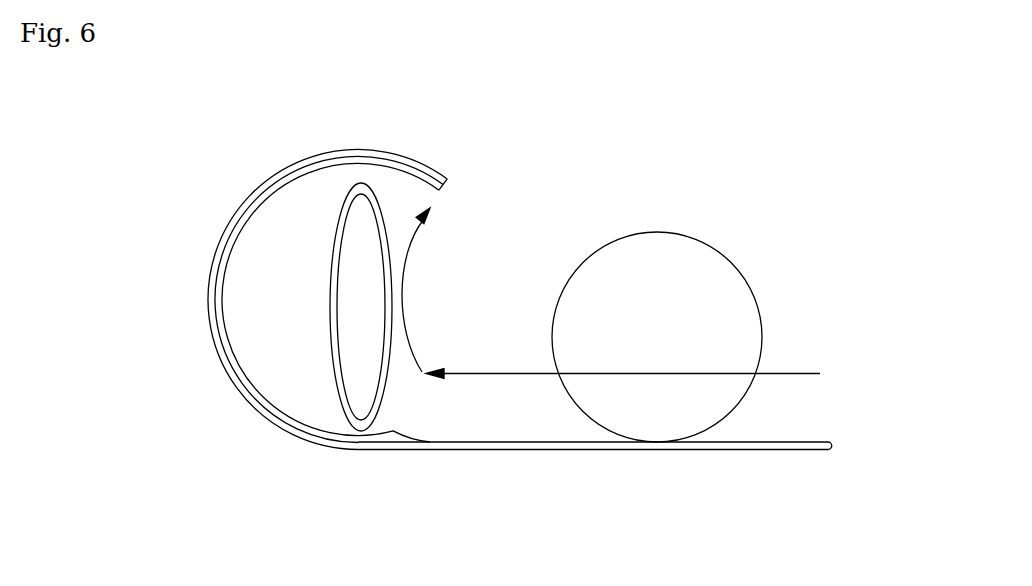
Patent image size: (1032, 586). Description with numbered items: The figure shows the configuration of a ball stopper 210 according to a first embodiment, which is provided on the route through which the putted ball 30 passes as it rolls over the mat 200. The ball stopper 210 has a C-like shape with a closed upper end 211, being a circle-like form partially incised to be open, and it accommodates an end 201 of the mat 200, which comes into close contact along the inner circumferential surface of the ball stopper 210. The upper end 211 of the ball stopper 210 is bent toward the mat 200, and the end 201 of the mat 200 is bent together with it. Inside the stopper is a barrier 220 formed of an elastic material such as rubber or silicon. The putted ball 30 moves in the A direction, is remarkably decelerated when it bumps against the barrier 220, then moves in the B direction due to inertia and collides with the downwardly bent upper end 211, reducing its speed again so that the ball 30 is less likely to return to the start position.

The mat 200 is at (518, 450).
The end of the mat 201 is at (446, 194).
The ball stopper 210 is at (232, 216).
The upper end 211 is at (448, 180).
The barrier 220 is at (350, 317).
The ball 30 is at (748, 310).
The A direction A is at (517, 372).
The B direction B is at (418, 246).